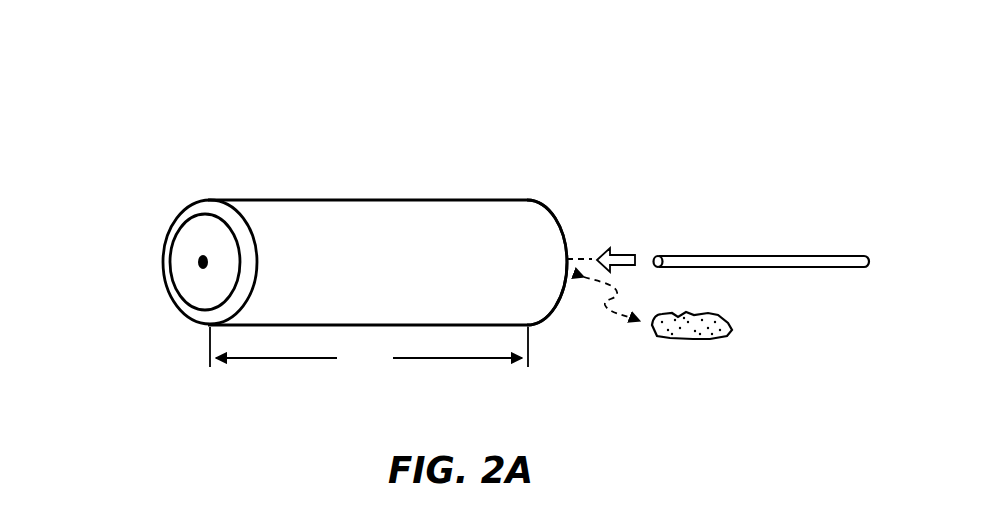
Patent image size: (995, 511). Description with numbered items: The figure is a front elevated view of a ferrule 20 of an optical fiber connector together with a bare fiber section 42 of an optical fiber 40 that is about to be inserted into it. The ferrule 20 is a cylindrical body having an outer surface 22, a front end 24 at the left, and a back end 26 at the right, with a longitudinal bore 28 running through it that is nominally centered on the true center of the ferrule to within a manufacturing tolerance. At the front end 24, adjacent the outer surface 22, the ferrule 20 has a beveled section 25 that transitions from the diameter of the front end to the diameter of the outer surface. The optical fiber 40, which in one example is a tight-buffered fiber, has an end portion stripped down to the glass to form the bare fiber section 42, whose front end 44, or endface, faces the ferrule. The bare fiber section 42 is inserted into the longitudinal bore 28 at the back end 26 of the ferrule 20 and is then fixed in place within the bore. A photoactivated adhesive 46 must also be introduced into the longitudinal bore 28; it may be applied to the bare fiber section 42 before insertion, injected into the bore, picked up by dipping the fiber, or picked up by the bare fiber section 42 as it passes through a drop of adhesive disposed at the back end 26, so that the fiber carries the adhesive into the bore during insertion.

The ferrule 20 is at (188, 154).
The outer surface 22 is at (308, 215).
The front end 24 is at (197, 235).
The beveled section 25 is at (208, 208).
The back end 26 is at (552, 214).
The longitudinal bore 28 is at (203, 270).
The optical fiber 40 is at (773, 229).
The bare fiber section 42 is at (699, 256).
The front end 44 is at (654, 261).
The photoactivated adhesive 46 is at (724, 320).